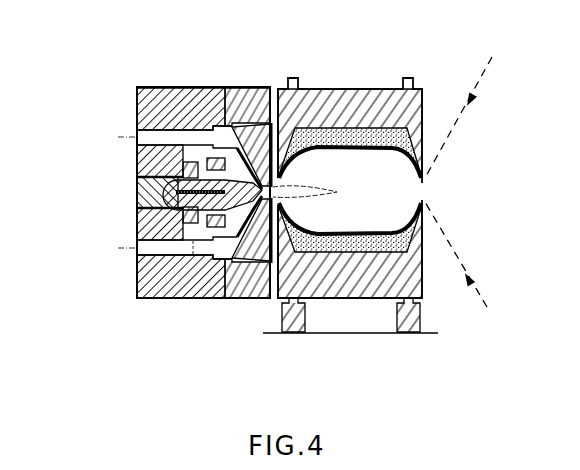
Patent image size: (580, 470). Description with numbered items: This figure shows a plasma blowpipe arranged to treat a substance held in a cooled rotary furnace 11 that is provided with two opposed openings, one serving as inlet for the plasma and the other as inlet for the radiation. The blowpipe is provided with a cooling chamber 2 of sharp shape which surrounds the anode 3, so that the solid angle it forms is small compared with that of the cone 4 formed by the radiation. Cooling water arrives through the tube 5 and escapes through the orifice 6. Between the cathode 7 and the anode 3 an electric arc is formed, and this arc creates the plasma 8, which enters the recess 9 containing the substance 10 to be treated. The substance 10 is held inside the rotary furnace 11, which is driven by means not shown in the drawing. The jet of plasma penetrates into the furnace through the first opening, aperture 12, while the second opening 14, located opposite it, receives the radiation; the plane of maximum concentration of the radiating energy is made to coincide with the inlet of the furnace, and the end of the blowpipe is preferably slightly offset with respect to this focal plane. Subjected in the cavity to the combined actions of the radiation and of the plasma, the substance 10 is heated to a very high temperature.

The cooling chamber 2 is at (213, 300).
The anode 3 is at (258, 300).
The cone formed by the radiation 4 is at (465, 112).
The tube 5 is at (137, 136).
The orifice 6 is at (137, 249).
The cathode 7 is at (230, 150).
The plasma 8 is at (312, 190).
The recess 9 is at (424, 213).
The substance to be treated 10 is at (390, 128).
The rotary furnace 11 is at (371, 296).
The aperture 12 is at (333, 296).
The second opening 14 is at (423, 192).